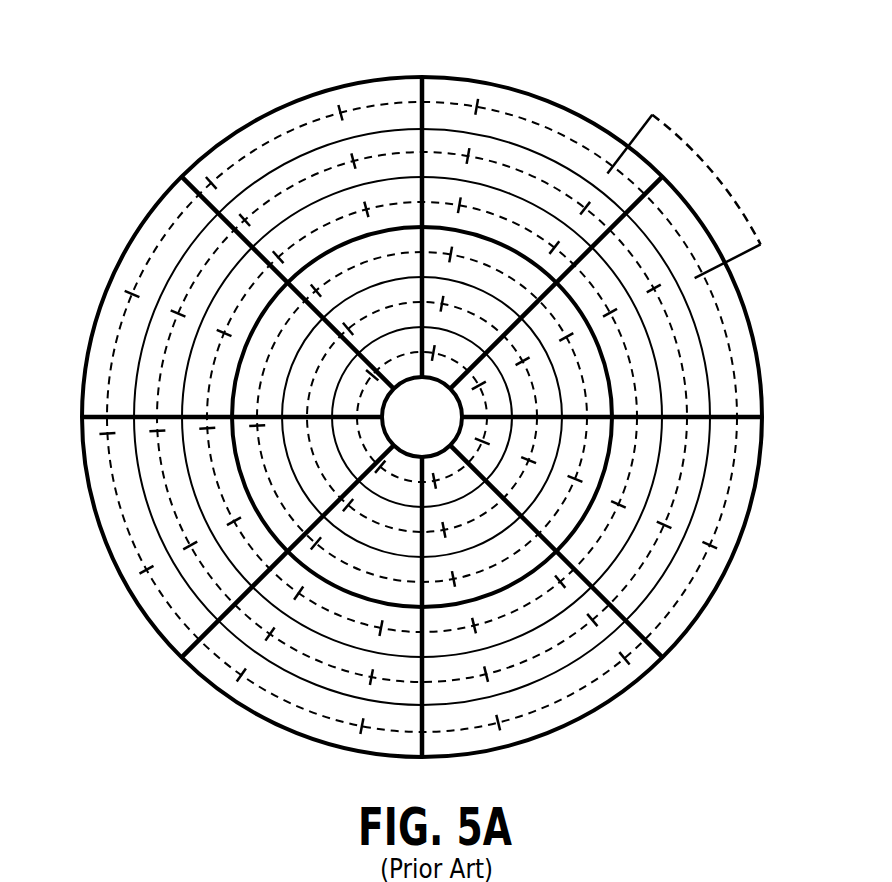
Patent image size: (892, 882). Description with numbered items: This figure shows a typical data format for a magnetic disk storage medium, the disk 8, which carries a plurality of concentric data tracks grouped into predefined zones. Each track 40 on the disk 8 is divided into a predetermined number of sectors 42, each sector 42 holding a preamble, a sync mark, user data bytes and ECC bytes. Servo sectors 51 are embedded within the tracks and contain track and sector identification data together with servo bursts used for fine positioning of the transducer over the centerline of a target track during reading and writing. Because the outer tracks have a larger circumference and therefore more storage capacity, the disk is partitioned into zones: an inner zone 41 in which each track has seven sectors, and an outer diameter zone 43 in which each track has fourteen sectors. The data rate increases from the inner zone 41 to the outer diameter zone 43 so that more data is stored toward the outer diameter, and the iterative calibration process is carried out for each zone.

The disk 8 is at (160, 130).
The track 40 is at (749, 522).
The inner zone 41 is at (279, 468).
The sector 42 is at (714, 146).
The outer diameter zone 43 is at (166, 274).
The servo sectors 51 is at (446, 86).